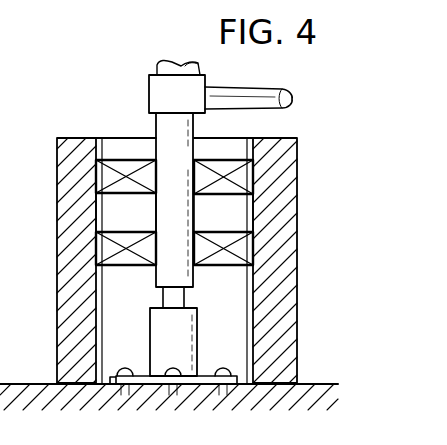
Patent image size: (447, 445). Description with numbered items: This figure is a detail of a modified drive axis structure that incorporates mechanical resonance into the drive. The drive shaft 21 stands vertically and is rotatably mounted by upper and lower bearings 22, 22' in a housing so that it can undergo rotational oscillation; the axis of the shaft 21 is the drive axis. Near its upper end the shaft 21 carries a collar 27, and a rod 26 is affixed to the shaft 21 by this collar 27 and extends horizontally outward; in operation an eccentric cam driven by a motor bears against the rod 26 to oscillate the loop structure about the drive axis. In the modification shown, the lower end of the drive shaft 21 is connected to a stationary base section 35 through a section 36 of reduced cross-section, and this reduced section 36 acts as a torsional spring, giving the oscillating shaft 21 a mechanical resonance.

The shaft 21 is at (168, 128).
The bearing 22 is at (195, 260).
The bearing 22' is at (217, 229).
The rod 26 is at (235, 94).
The collar 27 is at (163, 92).
The stationary base section 35 is at (181, 349).
The section of reduced cross-section 36 is at (164, 297).